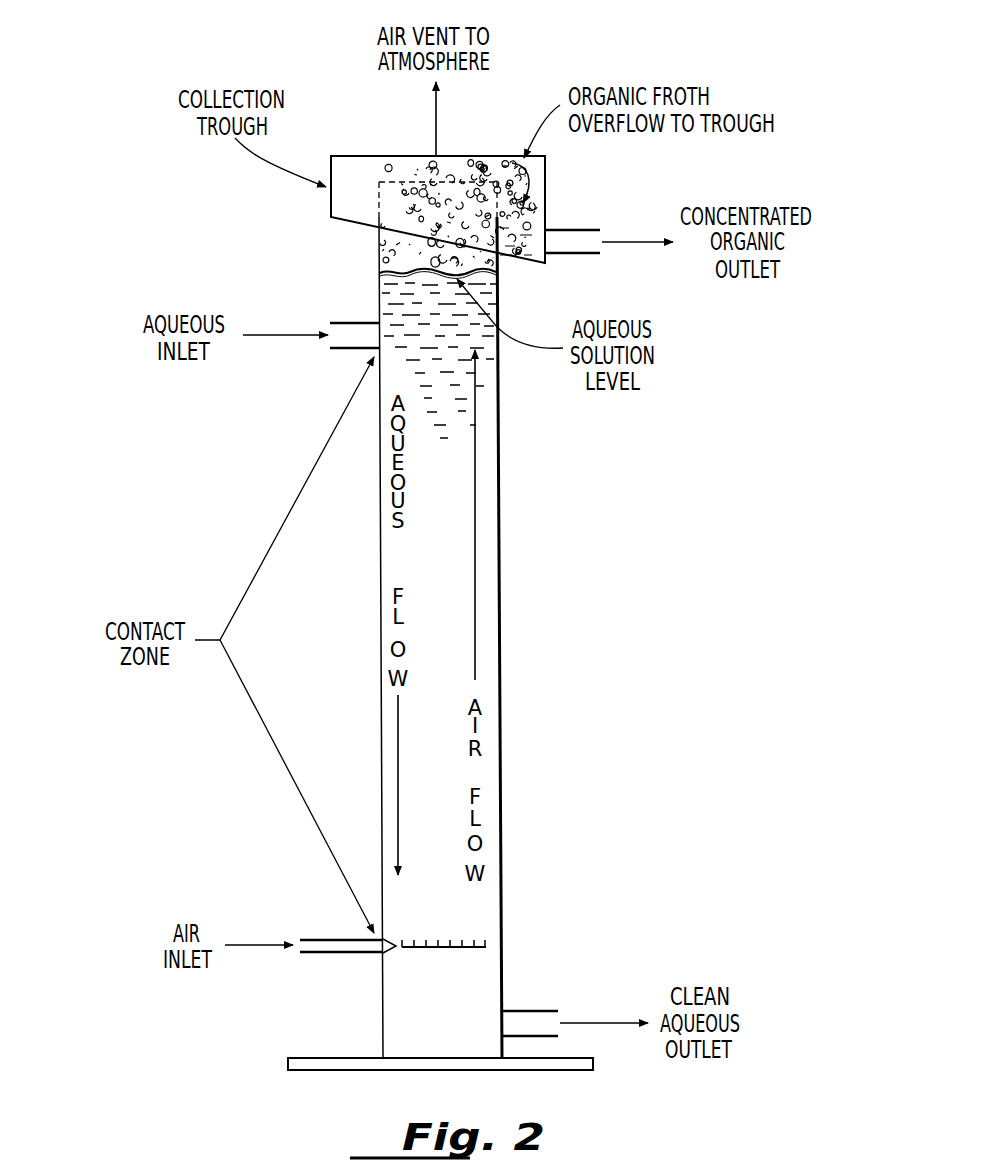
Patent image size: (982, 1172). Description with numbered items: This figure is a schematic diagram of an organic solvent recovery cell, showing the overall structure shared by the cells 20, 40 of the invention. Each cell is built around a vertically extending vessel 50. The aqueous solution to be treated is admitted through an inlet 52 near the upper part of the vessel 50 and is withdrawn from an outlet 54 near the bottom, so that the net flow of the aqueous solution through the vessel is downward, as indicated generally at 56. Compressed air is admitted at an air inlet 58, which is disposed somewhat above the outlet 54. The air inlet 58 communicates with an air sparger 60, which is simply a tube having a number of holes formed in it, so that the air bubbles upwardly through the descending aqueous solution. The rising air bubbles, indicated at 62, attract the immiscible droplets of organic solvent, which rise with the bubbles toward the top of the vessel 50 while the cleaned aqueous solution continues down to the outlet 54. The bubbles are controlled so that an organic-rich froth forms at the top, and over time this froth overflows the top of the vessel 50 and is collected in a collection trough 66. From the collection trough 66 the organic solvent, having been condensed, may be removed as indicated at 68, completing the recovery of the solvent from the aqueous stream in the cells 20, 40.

The cell 20 is at (509, 606).
The cell 40 is at (509, 606).
The vessel 50 is at (498, 485).
The inlet 52 is at (355, 322).
The outlet 54 is at (531, 1011).
The downward flow of aqueous solution 56 is at (401, 775).
The air inlet 58 is at (333, 953).
The air sparger 60 is at (455, 958).
The rising air bubbles 62 is at (475, 681).
The collection trough 66 is at (326, 219).
The organic solvent removal 68 is at (572, 229).